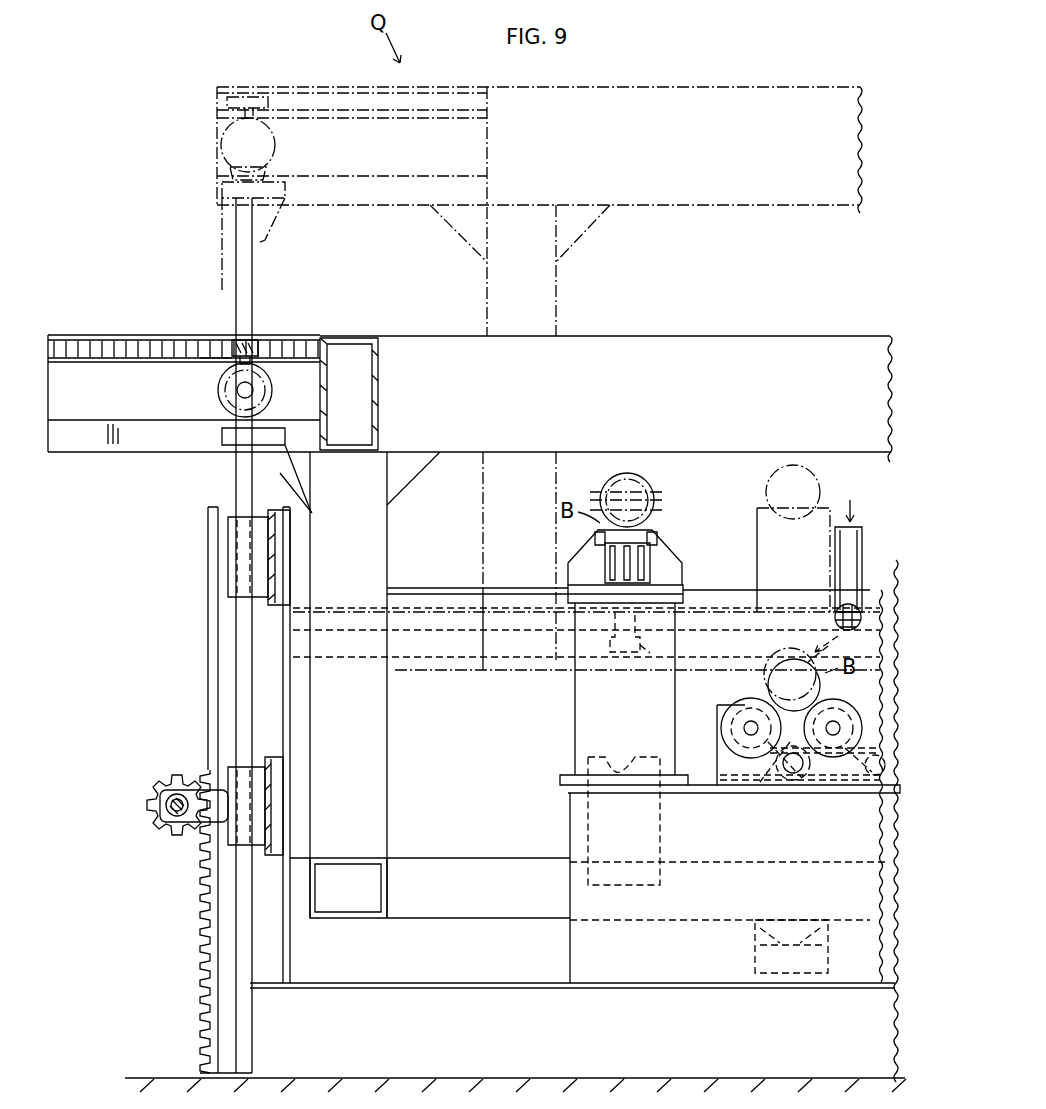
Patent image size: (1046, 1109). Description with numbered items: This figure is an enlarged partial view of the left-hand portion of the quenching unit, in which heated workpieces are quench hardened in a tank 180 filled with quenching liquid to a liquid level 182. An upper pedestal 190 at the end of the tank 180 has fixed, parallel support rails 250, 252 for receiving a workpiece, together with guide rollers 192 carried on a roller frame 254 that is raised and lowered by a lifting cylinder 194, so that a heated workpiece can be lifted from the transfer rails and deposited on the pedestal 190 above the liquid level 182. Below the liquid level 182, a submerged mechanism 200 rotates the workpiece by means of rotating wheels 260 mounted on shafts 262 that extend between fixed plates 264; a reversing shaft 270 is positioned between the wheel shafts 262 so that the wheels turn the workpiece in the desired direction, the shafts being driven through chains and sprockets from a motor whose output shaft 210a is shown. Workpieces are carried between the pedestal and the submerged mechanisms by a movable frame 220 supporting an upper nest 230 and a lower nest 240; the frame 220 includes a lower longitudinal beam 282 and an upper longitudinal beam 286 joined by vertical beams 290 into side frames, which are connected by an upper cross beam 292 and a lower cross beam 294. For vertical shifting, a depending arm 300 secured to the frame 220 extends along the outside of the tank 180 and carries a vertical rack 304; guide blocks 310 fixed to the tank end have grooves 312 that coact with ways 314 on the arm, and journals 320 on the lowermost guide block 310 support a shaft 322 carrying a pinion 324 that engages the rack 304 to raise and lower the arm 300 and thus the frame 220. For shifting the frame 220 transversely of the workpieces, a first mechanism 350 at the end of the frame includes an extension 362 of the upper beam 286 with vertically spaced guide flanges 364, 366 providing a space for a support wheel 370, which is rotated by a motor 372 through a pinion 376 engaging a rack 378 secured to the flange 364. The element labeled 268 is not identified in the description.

The upper longitudinal beam 286 is at (790, 95).
The first mechanism 350 is at (136, 477).
The extension 362 is at (143, 336).
The guide flange 364 is at (184, 380).
The guide flange 366 is at (173, 449).
The rack 378 is at (205, 340).
The pinion 376 is at (258, 345).
The support wheel 370 is at (268, 384).
The motor 372 is at (268, 428).
The upper cross beam 292 is at (378, 392).
The vertical beam 290 is at (558, 410).
The movable frame 220 is at (395, 795).
The depending arm 300 is at (218, 640).
The way 314 is at (243, 690).
The tank 180 is at (284, 656).
The guide block 310 is at (228, 580).
The groove 312 is at (276, 580).
The journal 320 is at (190, 780).
The pinion 324 is at (163, 790).
The shaft 322 is at (176, 826).
The rack 304 is at (200, 930).
The lower cross beam 294 is at (368, 914).
The liquid level 182 is at (430, 588).
The lower longitudinal beam 282 is at (898, 650).
The support rail 252 is at (650, 513).
The support rail 250 is at (605, 526).
The guide roller 192 is at (650, 552).
The upper pedestal 190 is at (683, 572).
The roller frame 254 is at (605, 590).
The lifting cylinder 194 is at (649, 644).
The upper nest 230 is at (835, 505).
The rotating wheel 260 is at (736, 706).
The shaft 262 is at (751, 721).
The reversing shaft 270 is at (795, 773).
The submerged mechanism 200 is at (772, 757).
The output shaft 210a is at (872, 785).
The fixed plate 264 is at (717, 757).
The support column 268 is at (570, 815).
The lower nest 240 is at (780, 935).